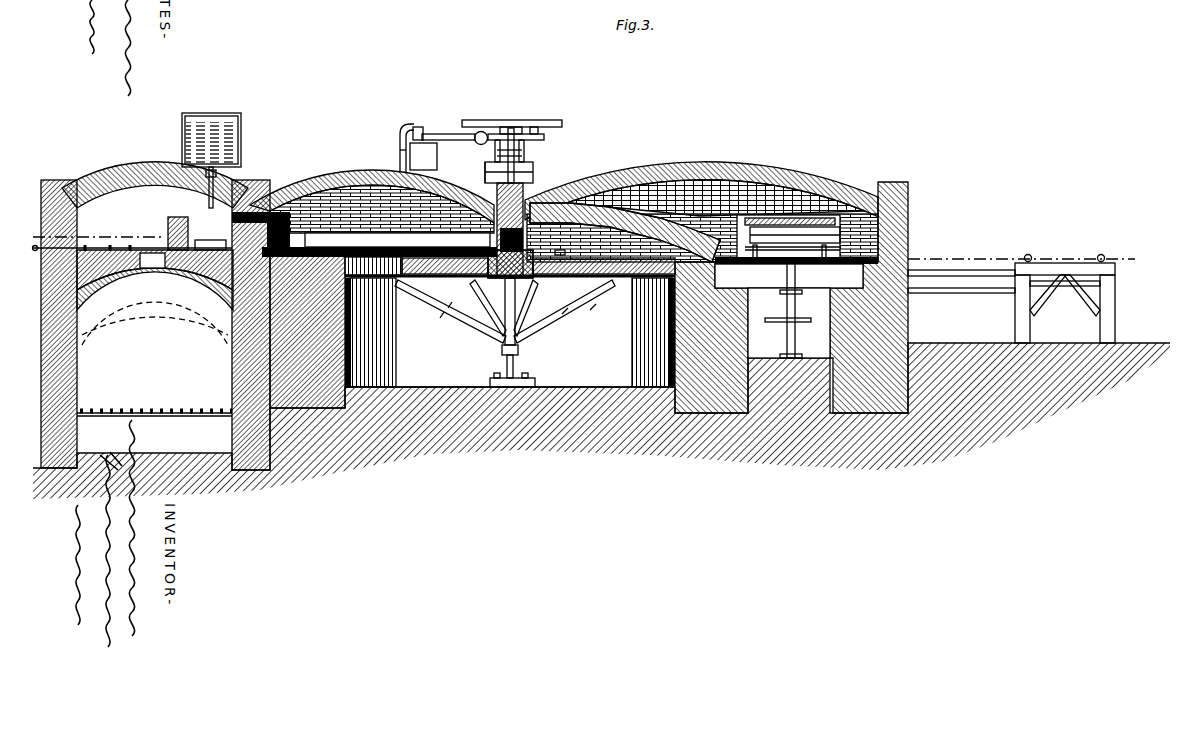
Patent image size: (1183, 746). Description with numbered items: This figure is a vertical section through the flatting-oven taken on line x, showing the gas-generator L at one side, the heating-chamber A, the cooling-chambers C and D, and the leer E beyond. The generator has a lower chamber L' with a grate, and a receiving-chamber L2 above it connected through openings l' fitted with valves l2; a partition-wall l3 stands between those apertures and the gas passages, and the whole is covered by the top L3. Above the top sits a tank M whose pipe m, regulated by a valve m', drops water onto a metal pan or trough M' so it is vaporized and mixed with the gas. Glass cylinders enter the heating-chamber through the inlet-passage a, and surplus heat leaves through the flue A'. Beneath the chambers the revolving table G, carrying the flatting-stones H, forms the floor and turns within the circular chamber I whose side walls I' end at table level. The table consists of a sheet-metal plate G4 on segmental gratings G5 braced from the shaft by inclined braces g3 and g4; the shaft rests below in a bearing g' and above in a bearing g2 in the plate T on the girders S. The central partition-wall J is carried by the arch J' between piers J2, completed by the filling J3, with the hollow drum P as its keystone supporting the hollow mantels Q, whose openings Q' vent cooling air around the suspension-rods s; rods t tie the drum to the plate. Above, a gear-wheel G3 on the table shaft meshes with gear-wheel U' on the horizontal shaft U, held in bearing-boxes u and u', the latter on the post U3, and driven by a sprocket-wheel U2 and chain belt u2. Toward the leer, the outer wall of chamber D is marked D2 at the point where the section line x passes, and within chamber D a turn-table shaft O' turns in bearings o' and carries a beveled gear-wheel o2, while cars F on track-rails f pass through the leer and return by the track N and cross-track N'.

The gas-generator L is at (134, 324).
The chamber of the gas-generator L' is at (154, 396).
The receiving-chamber L2 is at (155, 257).
The top or covering of the receiving-chamber L3 is at (142, 178).
The openings l' is at (152, 273).
The valves l2 is at (133, 240).
The partition-wall l3 is at (177, 223).
The section line x x is at (98, 230).
The tank M is at (220, 140).
The pipe m is at (202, 187).
The valve m' is at (230, 173).
The metal pan or trough M' is at (210, 232).
The inlet-passage a is at (284, 194).
The flue A' is at (372, 183).
The heating-chamber A is at (382, 209).
The openings in the mantels Q' is at (397, 238).
The central partition-wall J is at (379, 235).
The cars F is at (797, 158).
The hollow girders or mantels Q is at (604, 256).
The hollow casting or drum P is at (532, 180).
The circular chamber I is at (510, 362).
The circular sheet-metal plate G4 is at (660, 300).
The column G' is at (518, 328).
The bearing g' is at (518, 375).
The flatting-stones H is at (505, 311).
The segmental cast-iron gratings G5 is at (485, 289).
The revolving wheel or table G is at (514, 308).
The inclined braces g3 is at (510, 316).
The inclined braces g4 is at (604, 314).
The cooling-chamber D is at (702, 226).
The leer or annealing-oven E is at (853, 190).
The cooling-chamber C is at (625, 232).
The arch J' is at (555, 245).
The conveyor e is at (836, 222).
The track-rails f is at (826, 252).
The side walls of the circular chamber I' is at (711, 337).
The pier D2 is at (909, 243).
The vertical shaft O' is at (789, 308).
The bearings o' is at (796, 282).
The beveled gear-wheel o2 is at (784, 322).
The cross-track N' is at (961, 274).
The section line x x X is at (1029, 261).
The track N is at (1065, 291).
The suspension-rods s is at (505, 155).
The box V is at (548, 140).
The abutments or piers J2 is at (509, 173).
The filling J3 is at (485, 175).
The vertical suspension-rods t is at (509, 152).
The girders S is at (488, 153).
The bar S' is at (530, 152).
The gear-wheel G3 is at (563, 123).
The gear-wheel U' is at (504, 115).
The bearing g2 is at (535, 121).
The plate T is at (546, 137).
The bearing-box u is at (494, 125).
The shaft U is at (448, 123).
The bearing-box u' is at (421, 123).
The sprocket-wheel U2 is at (402, 125).
The chain belt u2 is at (400, 151).
The post U3 is at (423, 156).